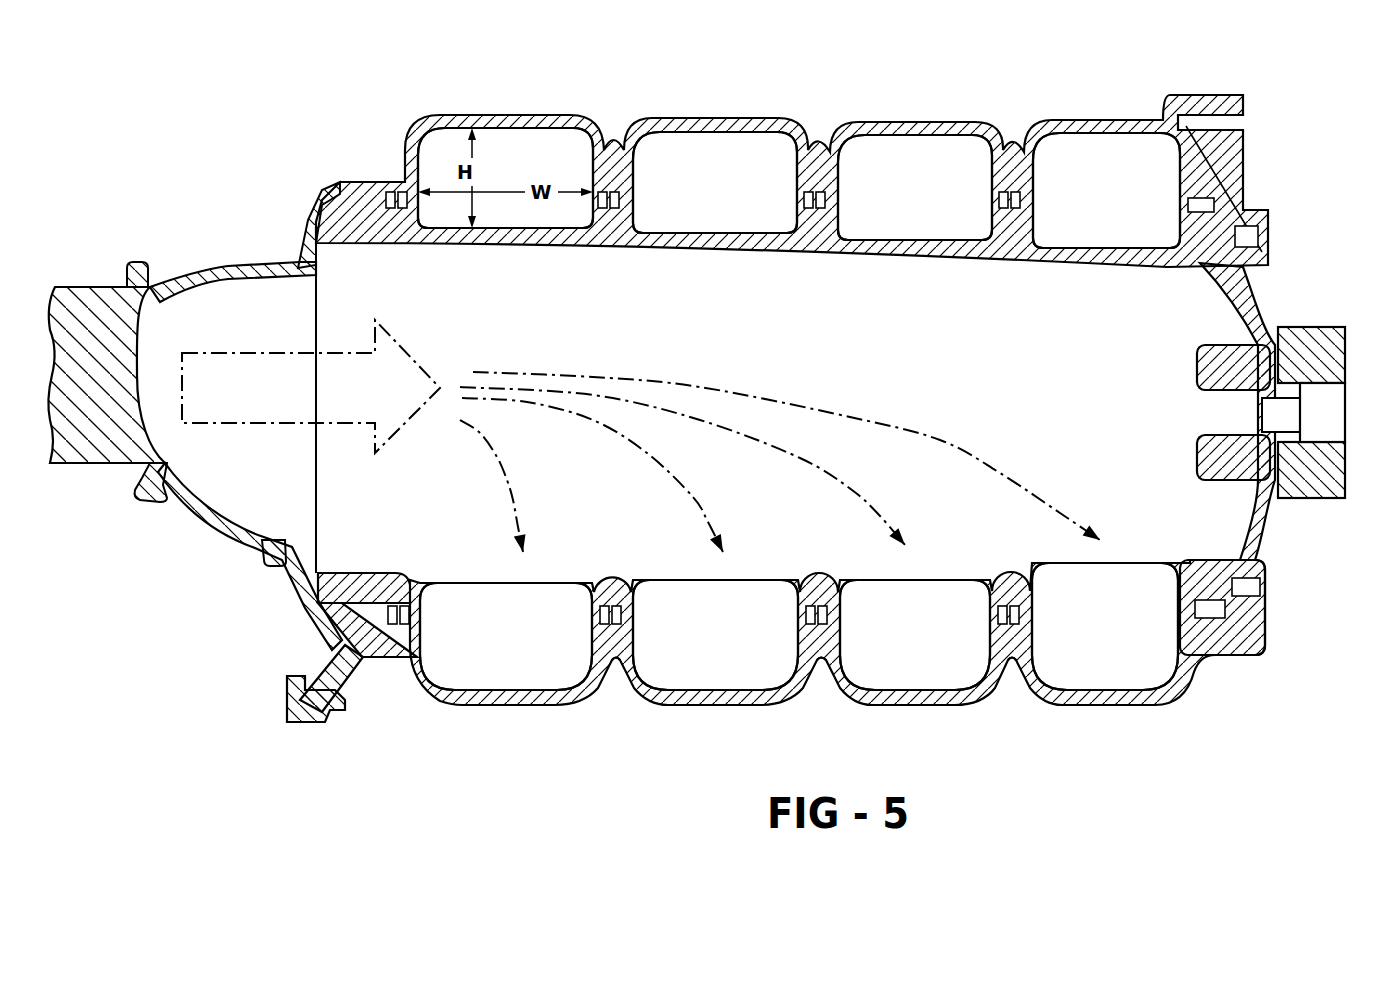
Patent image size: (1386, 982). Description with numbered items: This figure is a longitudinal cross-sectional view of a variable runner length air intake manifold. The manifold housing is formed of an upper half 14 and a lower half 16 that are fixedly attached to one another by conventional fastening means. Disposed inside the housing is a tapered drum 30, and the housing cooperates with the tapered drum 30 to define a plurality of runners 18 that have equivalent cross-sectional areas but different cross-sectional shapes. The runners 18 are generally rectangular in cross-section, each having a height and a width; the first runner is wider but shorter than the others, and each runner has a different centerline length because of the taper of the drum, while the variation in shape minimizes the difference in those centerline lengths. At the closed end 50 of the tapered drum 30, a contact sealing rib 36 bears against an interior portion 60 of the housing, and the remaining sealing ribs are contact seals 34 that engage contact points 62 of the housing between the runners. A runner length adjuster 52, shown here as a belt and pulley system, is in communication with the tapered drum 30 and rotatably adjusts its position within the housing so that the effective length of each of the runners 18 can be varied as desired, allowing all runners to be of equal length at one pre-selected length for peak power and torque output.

The upper half 14 is at (215, 263).
The lower half 16 is at (1138, 705).
The runners 18 is at (520, 137).
The tapered drum 30 is at (1010, 262).
The contact seals 34 is at (405, 600).
The sealing rib 36 is at (1185, 610).
The closed end 50 is at (1268, 308).
The runner length adjuster 52 is at (1310, 498).
The interior portion 60 is at (1225, 657).
The contact points 62 is at (362, 657).